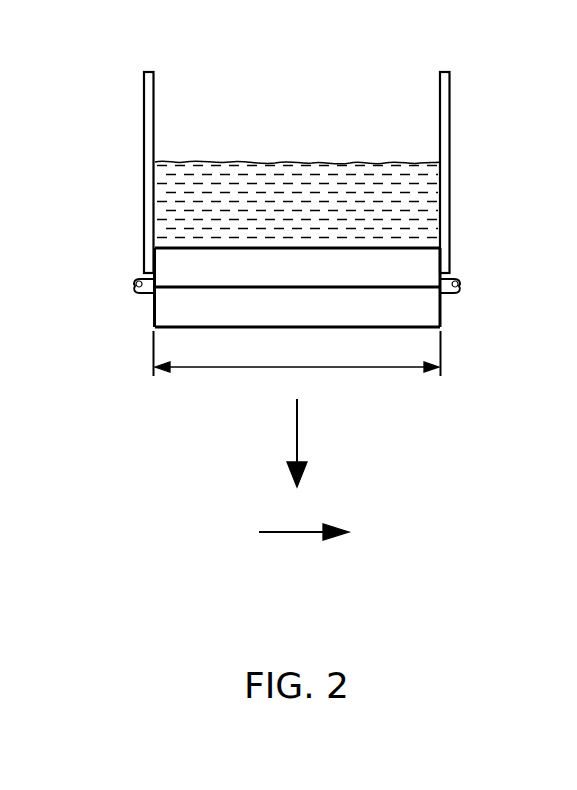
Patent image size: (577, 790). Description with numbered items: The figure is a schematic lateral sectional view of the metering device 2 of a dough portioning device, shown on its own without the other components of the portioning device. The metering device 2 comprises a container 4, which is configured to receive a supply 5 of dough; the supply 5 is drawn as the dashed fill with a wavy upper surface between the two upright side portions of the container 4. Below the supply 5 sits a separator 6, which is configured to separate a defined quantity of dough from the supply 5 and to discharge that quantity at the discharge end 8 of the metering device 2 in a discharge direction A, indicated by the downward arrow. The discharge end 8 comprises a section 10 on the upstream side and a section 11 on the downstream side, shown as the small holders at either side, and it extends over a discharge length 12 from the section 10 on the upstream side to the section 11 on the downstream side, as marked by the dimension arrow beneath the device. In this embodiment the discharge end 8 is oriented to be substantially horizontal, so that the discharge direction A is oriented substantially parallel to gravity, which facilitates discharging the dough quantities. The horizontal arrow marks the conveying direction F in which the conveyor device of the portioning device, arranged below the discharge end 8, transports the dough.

The metering device 2 is at (53, 76).
The container 4 is at (447, 93).
The supply of dough 5 is at (250, 180).
The separator 6 is at (418, 244).
The discharge end 8 is at (234, 379).
The section on the upstream side 10 is at (151, 316).
The section on the downstream side 11 is at (458, 308).
The discharge length 12 is at (352, 368).
The discharge direction A is at (296, 429).
The conveying direction F is at (288, 534).